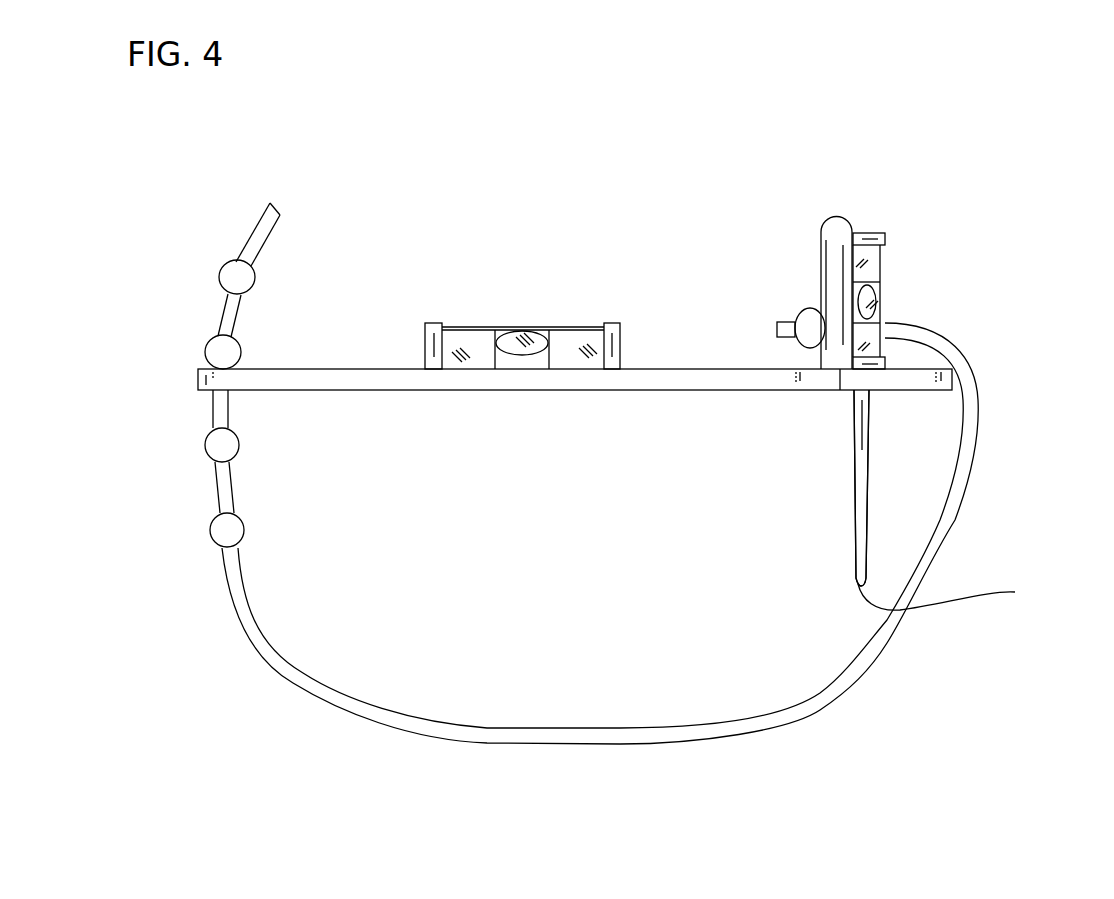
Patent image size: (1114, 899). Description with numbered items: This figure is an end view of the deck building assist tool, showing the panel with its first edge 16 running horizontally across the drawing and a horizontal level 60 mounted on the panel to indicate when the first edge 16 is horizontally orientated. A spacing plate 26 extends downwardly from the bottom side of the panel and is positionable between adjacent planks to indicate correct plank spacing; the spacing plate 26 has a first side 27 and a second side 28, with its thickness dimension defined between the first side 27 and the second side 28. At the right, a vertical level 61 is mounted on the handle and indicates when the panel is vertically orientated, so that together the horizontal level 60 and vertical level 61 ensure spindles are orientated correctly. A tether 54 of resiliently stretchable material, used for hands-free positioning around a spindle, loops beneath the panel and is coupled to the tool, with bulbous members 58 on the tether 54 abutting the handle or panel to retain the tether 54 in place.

The first edge 16 is at (663, 369).
The spacing plate 26 is at (956, 593).
The first side 27 is at (855, 465).
The second side 28 is at (869, 438).
The tether 54 is at (853, 687).
The bulbous members 58 is at (255, 277).
The horizontal level 60 is at (580, 328).
The vertical level 61 is at (878, 257).